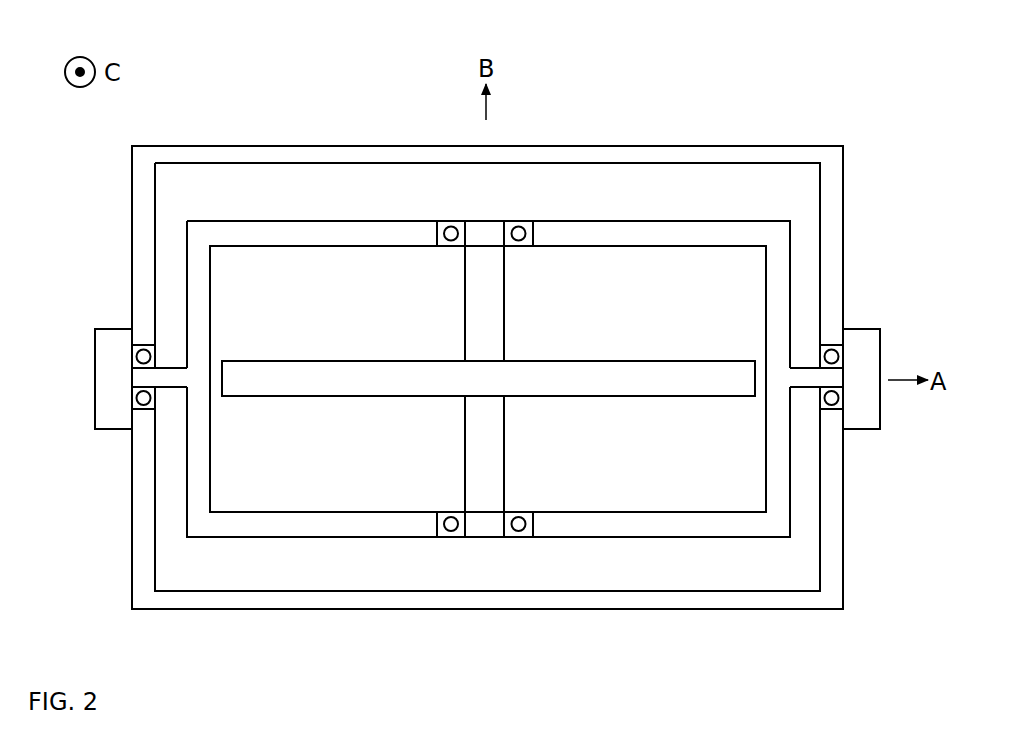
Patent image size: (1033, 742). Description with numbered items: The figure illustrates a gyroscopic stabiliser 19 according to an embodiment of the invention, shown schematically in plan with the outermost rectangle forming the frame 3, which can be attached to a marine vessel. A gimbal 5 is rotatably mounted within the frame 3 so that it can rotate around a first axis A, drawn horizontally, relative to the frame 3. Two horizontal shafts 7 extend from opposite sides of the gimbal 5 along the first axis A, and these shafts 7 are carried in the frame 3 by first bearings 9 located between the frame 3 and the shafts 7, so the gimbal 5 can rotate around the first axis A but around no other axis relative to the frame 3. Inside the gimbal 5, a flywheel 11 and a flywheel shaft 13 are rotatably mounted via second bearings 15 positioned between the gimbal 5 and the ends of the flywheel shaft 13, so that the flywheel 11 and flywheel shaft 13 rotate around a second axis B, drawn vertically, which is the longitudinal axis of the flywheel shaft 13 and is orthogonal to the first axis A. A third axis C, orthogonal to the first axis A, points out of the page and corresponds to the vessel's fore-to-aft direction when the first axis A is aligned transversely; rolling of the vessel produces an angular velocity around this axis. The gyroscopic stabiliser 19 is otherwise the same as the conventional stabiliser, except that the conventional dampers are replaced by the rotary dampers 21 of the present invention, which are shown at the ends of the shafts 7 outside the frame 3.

The frame 3 is at (552, 146).
The gimbal 5 is at (734, 224).
The horizontal shafts 7 is at (803, 374).
The first bearings 9 is at (831, 411).
The flywheel 11 is at (597, 378).
The flywheel shaft 13 is at (484, 467).
The second bearings 15 is at (521, 540).
The gyroscopic stabiliser 19 is at (204, 96).
The rotary dampers 21 is at (869, 346).